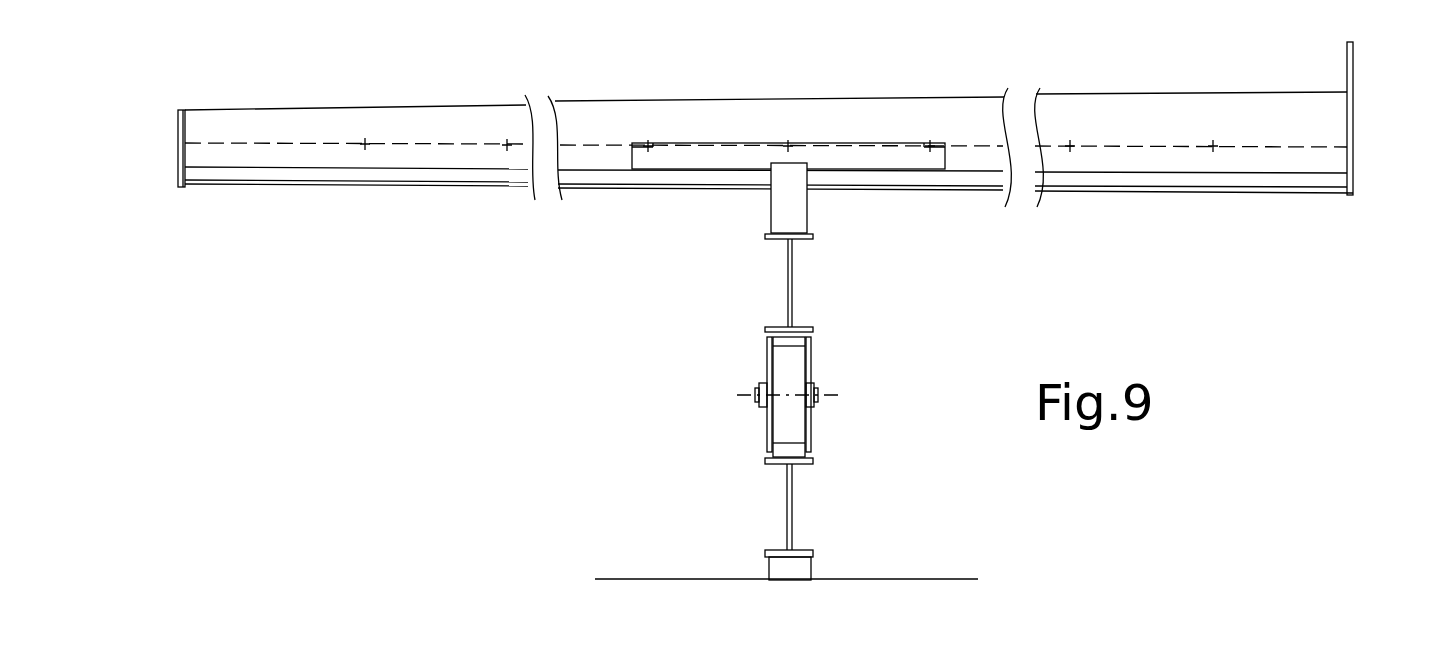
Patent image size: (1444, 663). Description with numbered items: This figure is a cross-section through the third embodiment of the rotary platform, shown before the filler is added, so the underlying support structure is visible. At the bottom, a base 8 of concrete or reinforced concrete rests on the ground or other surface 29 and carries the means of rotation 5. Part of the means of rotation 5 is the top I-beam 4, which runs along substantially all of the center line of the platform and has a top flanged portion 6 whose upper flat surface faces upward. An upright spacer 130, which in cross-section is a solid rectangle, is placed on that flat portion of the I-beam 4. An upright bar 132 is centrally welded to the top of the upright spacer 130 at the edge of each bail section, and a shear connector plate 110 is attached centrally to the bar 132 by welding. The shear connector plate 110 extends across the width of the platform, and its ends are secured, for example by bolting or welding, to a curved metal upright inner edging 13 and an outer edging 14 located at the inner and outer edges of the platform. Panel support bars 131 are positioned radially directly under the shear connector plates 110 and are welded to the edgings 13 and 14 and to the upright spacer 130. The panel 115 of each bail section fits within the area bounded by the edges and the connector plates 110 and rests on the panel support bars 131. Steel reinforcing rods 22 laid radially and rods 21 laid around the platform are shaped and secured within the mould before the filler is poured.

The shear connector plate 110 is at (859, 96).
The panel 115 is at (470, 186).
The panel support bar 131 is at (1197, 202).
The steel reinforcing rod 22 is at (437, 128).
The steel reinforcing rod 21 is at (354, 156).
The outer edging 14 is at (168, 140).
The inner edging 13 is at (1358, 119).
The upright bar 132 is at (924, 174).
The upright spacer 130 is at (804, 207).
The top flanged portion 6 is at (758, 243).
The top I-beam 4 is at (804, 297).
The means of rotation 5 is at (735, 330).
The base 8 is at (816, 562).
The ground or other surface 29 is at (644, 587).